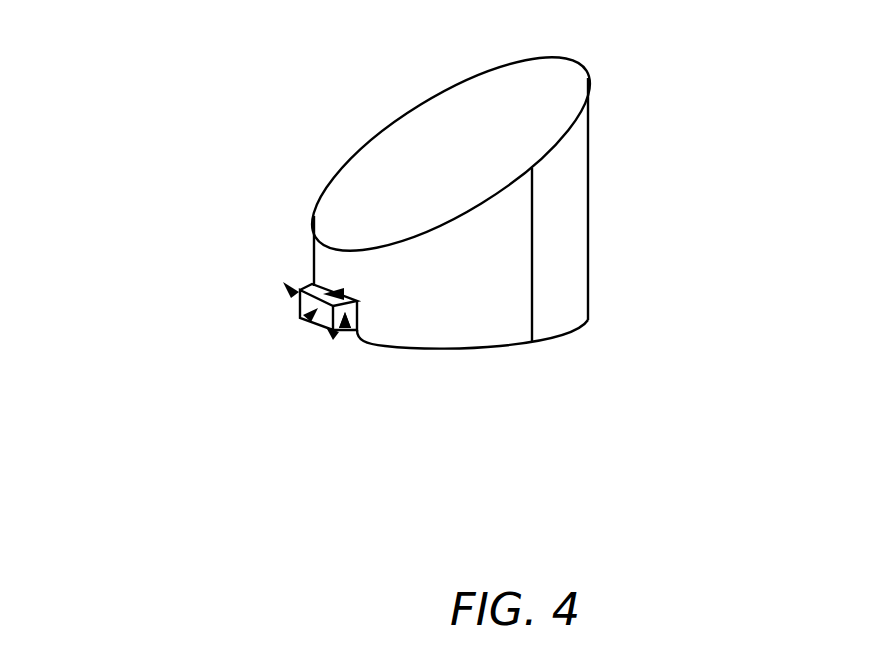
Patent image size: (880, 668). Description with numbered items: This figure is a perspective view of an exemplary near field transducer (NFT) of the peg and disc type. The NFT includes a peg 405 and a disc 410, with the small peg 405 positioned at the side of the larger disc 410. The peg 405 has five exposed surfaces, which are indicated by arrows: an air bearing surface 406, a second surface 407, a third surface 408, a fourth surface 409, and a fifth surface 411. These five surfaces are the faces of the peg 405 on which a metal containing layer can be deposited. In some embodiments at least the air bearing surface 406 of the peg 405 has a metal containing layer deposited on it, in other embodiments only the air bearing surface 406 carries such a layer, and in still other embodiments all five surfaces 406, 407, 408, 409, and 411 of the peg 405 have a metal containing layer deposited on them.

The peg 405 is at (317, 338).
The air bearing surface 406 is at (304, 317).
The second surface 407 is at (337, 336).
The third surface 408 is at (347, 331).
The fourth surface 409 is at (344, 294).
The disc 410 is at (485, 147).
The fifth surface 411 is at (288, 285).